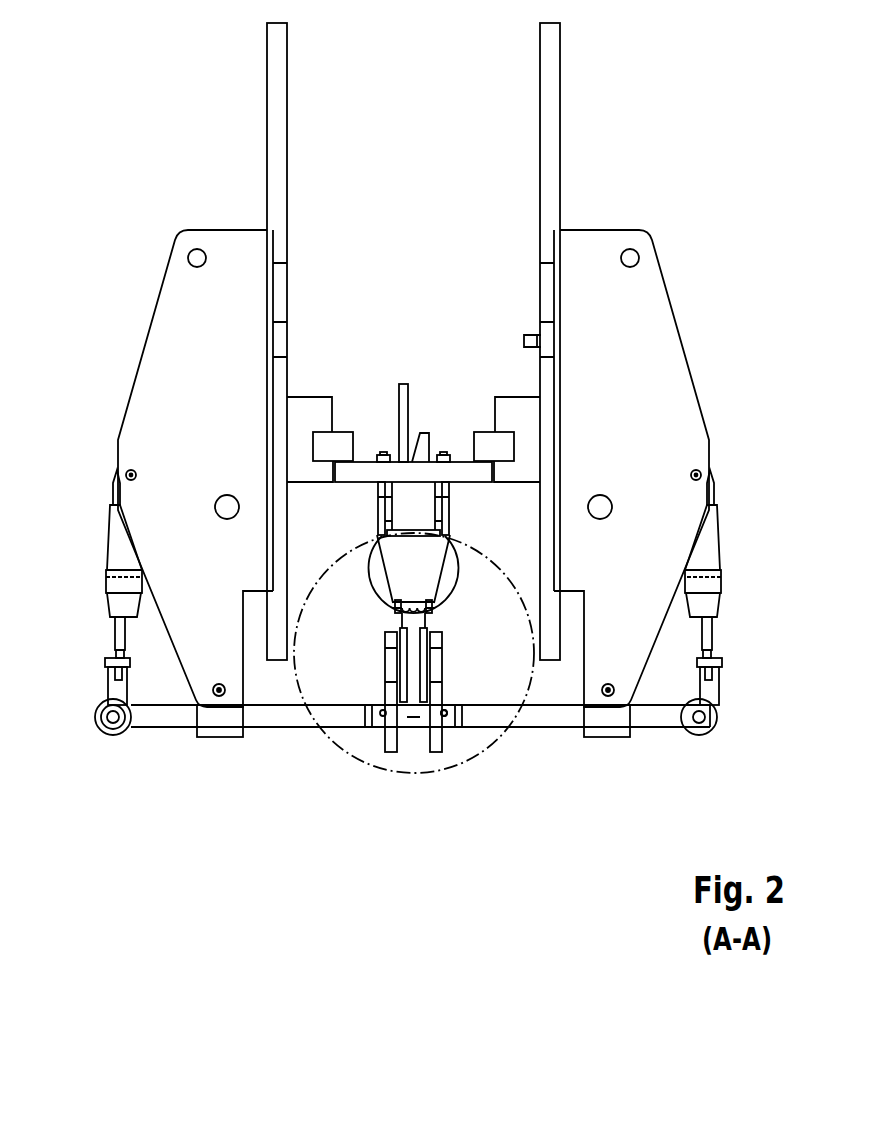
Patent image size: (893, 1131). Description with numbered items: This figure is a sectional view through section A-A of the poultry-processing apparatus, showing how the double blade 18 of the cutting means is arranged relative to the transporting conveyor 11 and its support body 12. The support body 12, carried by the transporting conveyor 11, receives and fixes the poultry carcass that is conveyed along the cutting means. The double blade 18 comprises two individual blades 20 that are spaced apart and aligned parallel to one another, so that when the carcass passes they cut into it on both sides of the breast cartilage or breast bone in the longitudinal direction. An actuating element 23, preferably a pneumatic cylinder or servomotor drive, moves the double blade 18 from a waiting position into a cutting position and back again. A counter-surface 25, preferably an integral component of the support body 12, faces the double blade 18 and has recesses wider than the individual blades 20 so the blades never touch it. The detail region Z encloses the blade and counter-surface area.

The transporting conveyor 11 is at (436, 420).
The support body 12 is at (393, 560).
The counter-surface 25 is at (421, 592).
The individual blades 20 is at (396, 620).
The double blade 18 is at (412, 750).
The detail region Z is at (470, 755).
The actuating element 23 is at (110, 540).